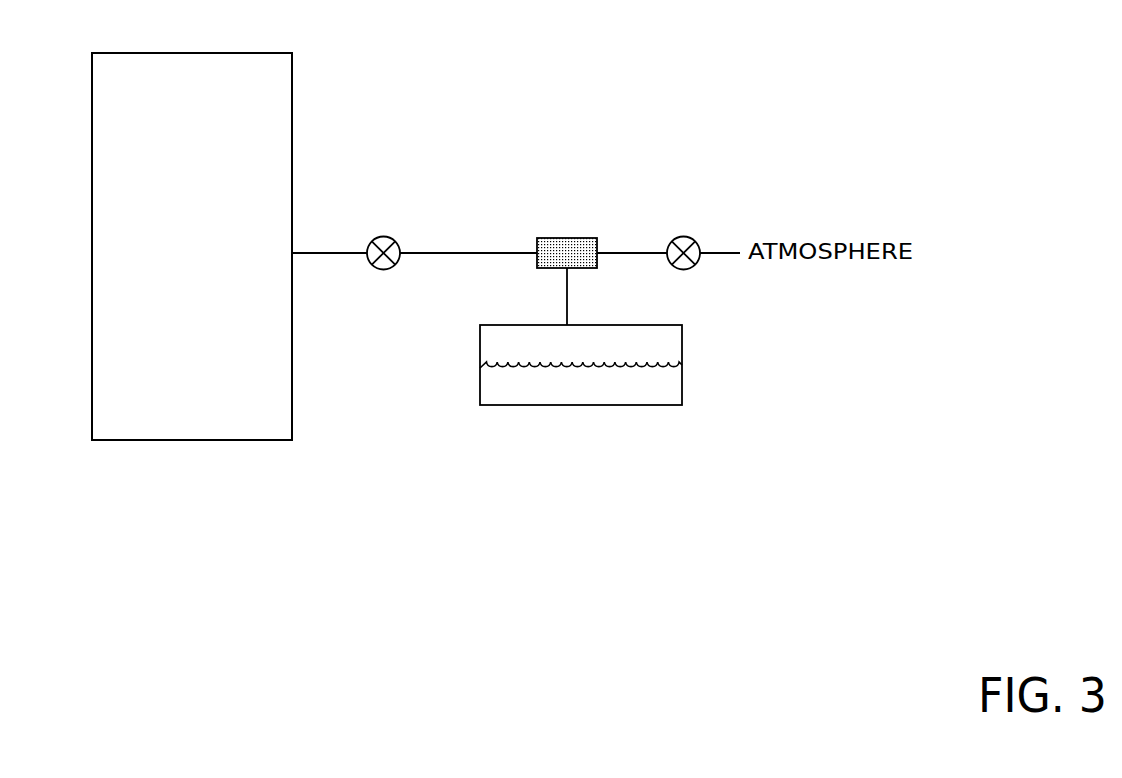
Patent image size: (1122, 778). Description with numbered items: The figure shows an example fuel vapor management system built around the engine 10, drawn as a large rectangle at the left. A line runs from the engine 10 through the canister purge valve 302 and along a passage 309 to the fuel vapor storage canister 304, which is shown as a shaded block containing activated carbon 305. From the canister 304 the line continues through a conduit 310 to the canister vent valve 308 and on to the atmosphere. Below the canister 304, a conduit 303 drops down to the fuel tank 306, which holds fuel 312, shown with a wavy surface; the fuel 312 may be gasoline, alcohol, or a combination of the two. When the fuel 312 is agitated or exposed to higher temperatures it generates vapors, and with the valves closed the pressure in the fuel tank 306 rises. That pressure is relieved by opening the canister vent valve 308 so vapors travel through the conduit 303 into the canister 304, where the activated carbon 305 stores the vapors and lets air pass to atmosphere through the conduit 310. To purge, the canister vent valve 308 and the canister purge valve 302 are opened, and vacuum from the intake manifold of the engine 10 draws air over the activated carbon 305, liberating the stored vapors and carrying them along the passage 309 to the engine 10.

The engine 10 is at (206, 257).
The canister purge valve 302 is at (389, 238).
The conduit 303 is at (568, 313).
The fuel vapor storage canister 304 is at (565, 238).
The activated carbon 305 is at (540, 267).
The fuel tank 306 is at (662, 325).
The canister vent valve 308 is at (689, 238).
The purge line 309 is at (452, 253).
The conduit 310 is at (617, 253).
The fuel 312 is at (601, 397).